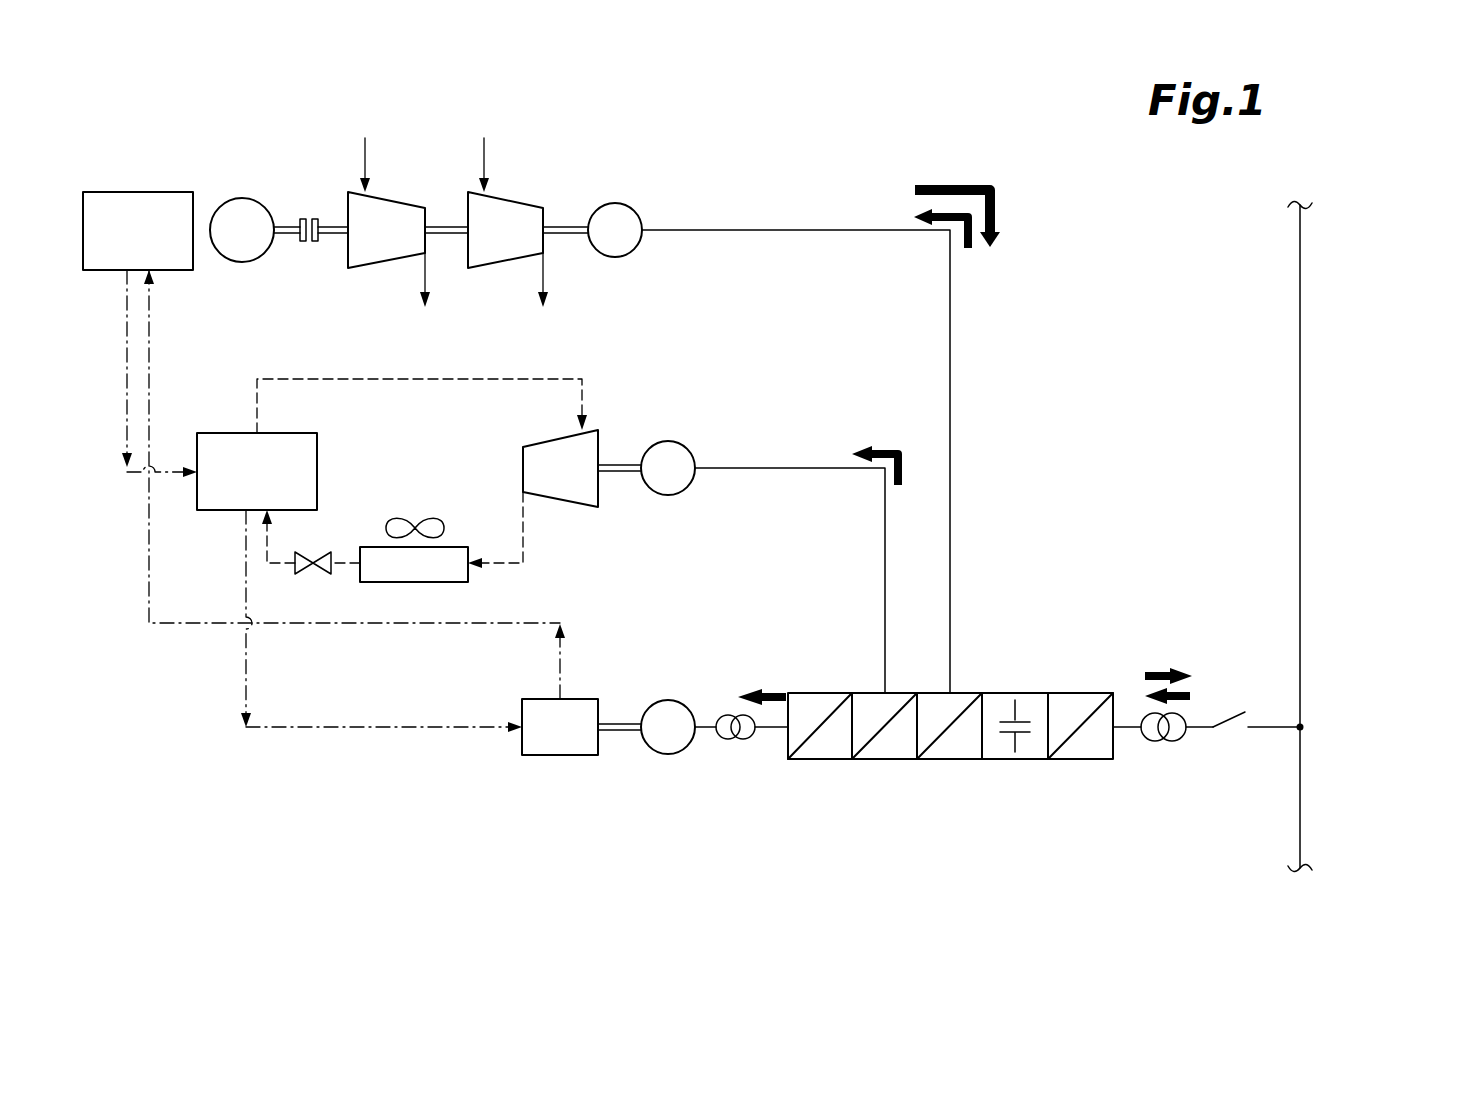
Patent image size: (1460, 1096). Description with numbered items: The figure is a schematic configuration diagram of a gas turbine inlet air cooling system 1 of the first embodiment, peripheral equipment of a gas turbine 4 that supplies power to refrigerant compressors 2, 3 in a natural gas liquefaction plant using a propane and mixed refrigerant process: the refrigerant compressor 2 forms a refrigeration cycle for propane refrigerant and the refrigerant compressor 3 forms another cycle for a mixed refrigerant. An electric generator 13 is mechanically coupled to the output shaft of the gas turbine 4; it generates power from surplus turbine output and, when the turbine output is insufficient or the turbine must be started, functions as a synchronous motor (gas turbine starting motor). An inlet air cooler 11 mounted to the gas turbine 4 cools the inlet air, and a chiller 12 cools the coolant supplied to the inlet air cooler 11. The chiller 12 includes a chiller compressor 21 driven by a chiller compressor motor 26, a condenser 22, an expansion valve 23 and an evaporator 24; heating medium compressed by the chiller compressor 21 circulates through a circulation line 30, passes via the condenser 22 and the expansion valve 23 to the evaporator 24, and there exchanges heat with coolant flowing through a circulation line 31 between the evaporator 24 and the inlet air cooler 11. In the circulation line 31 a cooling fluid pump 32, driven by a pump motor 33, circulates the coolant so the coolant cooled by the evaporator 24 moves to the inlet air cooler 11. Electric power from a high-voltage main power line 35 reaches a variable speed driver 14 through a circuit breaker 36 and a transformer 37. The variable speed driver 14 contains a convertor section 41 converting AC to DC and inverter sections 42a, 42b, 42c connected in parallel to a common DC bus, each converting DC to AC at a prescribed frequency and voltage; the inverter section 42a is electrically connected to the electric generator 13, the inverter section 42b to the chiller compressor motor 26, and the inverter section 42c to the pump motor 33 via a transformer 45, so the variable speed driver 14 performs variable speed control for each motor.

The gas turbine inlet air cooling system 1 is at (828, 155).
The refrigerant compressor 2 is at (400, 200).
The refrigerant compressor 3 is at (525, 200).
The gas turbine 4 is at (250, 198).
The inlet air cooler 11 is at (146, 192).
The chiller 12 is at (626, 358).
The electric generator 13 is at (625, 205).
The variable speed driver 14 is at (950, 738).
The chiller compressor 21 is at (572, 507).
The condenser 22 is at (440, 583).
The expansion valve 23 is at (320, 552).
The evaporator 24 is at (317, 468).
The chiller compressor motor 26 is at (687, 449).
The circulation line 30 is at (483, 378).
The circulation line 31 is at (148, 610).
The cooling fluid pump 32 is at (578, 755).
The pump motor 33 is at (685, 703).
The high-voltage main power line 35 is at (1300, 327).
The circuit breaker 36 is at (1228, 716).
The transformer 37 is at (1160, 741).
The convertor section 41 is at (1082, 760).
The inverter section 42a is at (975, 760).
The inverter section 42b is at (880, 760).
The inverter section 42c is at (820, 760).
The transformer 45 is at (728, 740).